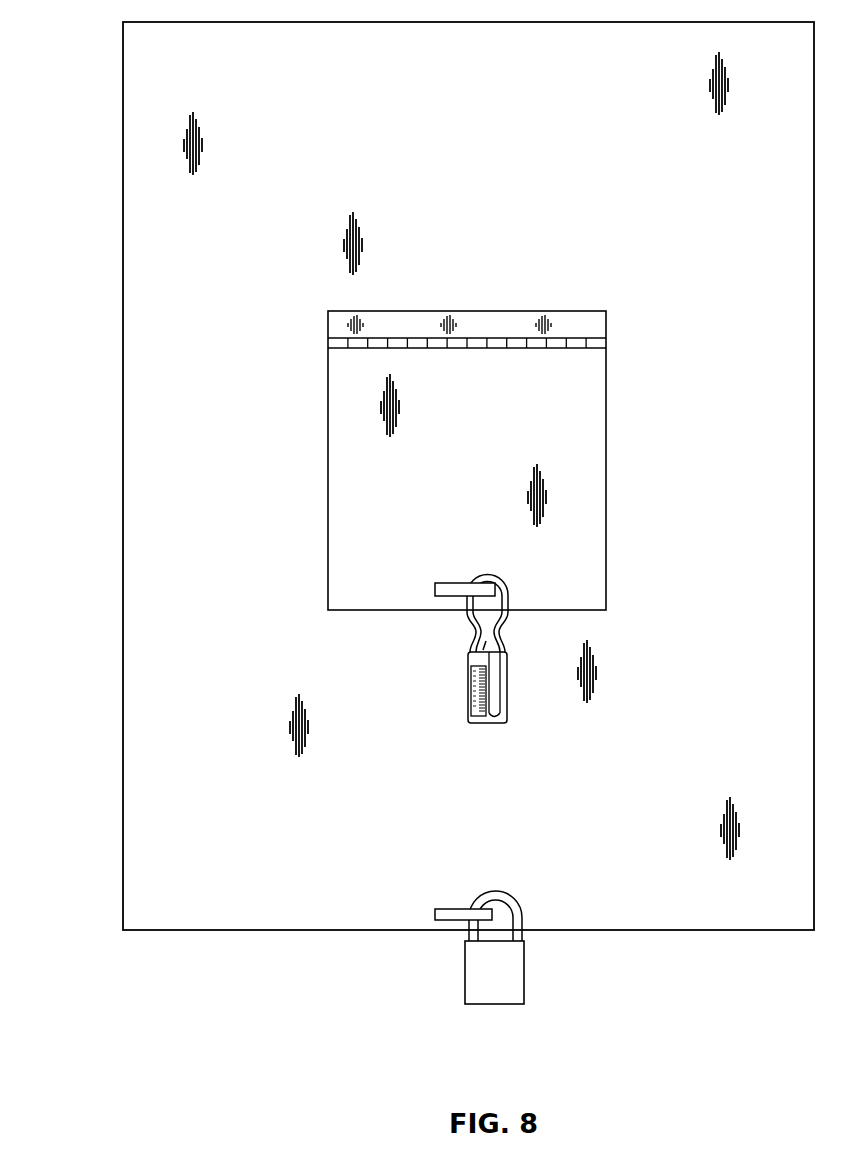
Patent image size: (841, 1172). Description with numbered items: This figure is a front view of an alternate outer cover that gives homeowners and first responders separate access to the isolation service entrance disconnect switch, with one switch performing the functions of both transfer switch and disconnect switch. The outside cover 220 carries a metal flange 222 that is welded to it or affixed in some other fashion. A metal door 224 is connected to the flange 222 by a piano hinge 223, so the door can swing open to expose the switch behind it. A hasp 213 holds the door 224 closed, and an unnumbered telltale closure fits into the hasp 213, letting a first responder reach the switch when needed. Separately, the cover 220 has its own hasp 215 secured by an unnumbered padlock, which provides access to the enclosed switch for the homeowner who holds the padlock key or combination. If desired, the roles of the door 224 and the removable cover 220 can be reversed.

The hasp 213 is at (440, 590).
The hasp 215 is at (440, 915).
The outside cover 220 is at (185, 510).
The metal flange 222 is at (328, 326).
The piano hinge 223 is at (328, 346).
The metal door 224 is at (343, 431).